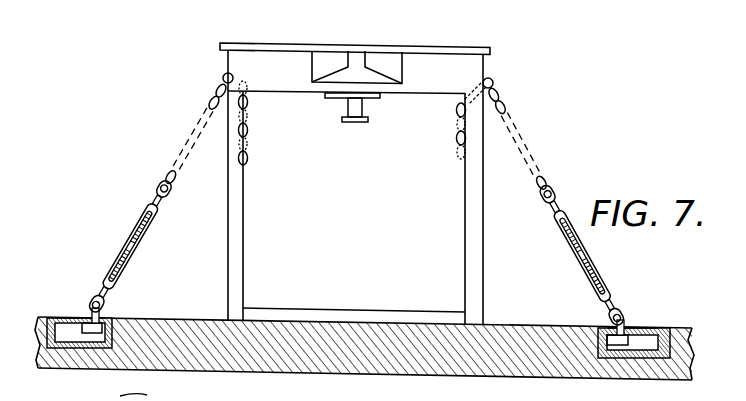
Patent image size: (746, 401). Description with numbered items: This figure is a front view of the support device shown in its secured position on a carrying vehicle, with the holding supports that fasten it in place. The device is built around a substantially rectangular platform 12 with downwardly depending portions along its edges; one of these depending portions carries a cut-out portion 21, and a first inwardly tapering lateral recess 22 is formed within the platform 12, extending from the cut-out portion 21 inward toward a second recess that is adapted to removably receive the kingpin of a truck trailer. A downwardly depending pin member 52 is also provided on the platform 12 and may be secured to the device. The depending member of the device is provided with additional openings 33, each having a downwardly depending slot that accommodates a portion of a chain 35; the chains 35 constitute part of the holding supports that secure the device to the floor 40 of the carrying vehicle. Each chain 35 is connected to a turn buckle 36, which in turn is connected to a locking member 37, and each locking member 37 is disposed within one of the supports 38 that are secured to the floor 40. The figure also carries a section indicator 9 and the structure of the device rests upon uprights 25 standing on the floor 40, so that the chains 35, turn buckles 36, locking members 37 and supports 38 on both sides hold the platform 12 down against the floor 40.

The section line arrow 9 is at (162, 400).
The platform 12 is at (443, 45).
The cut-out portion 21 is at (312, 72).
The first inwardly tapering lateral recess 22 is at (331, 63).
The support columns 25 is at (228, 240).
The additional openings 33 is at (492, 80).
The chain 35 is at (207, 101).
The turn buckle 36 is at (141, 221).
The locking member 37 is at (104, 322).
The supports 38 is at (56, 319).
The floor 40 is at (570, 378).
The downwardly depending pin member 52 is at (362, 109).